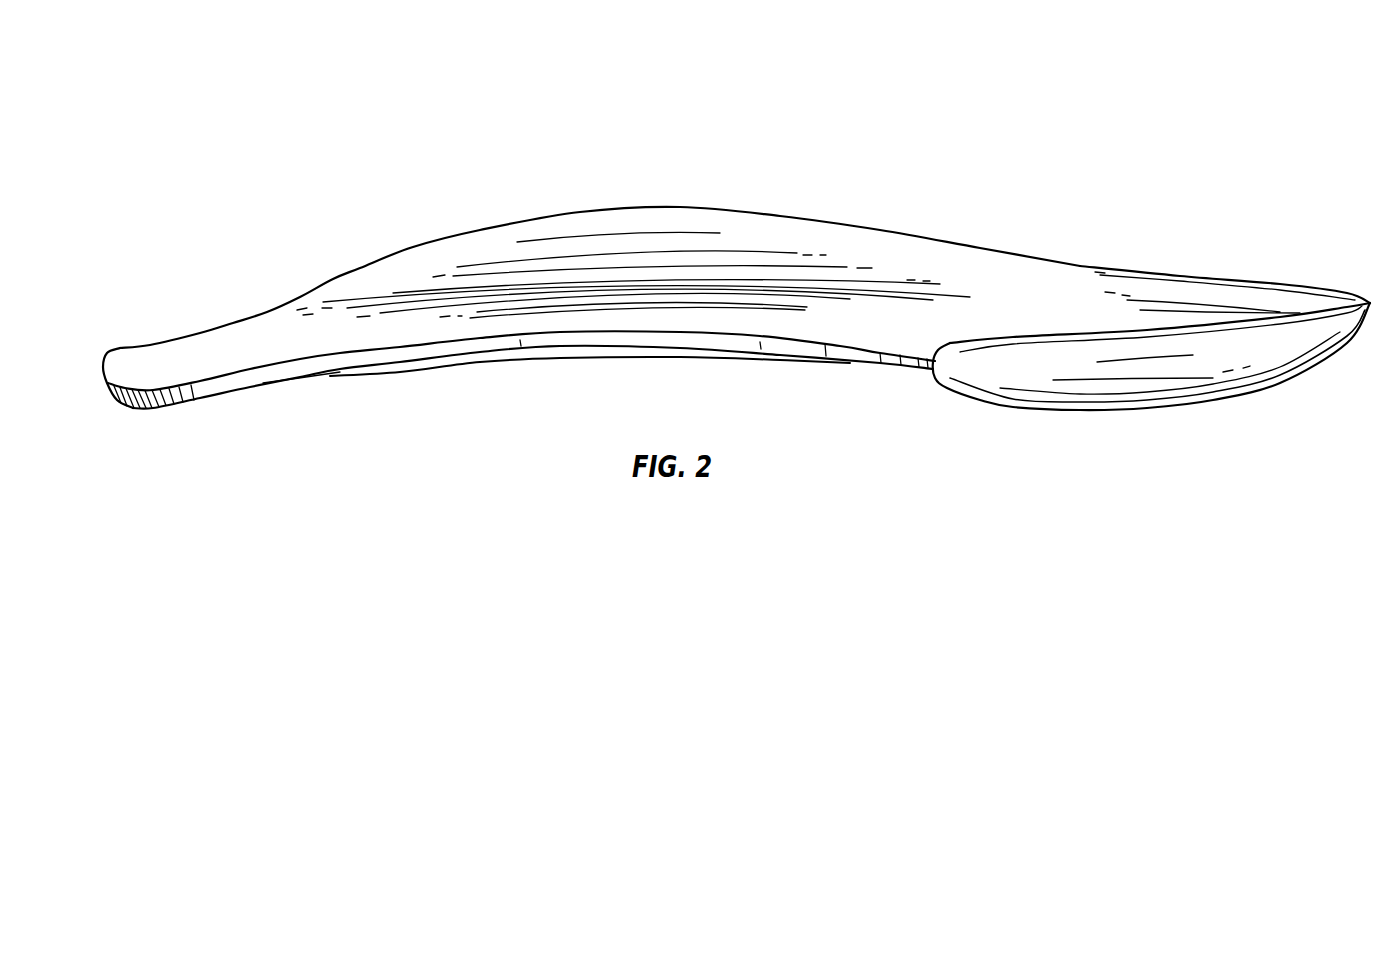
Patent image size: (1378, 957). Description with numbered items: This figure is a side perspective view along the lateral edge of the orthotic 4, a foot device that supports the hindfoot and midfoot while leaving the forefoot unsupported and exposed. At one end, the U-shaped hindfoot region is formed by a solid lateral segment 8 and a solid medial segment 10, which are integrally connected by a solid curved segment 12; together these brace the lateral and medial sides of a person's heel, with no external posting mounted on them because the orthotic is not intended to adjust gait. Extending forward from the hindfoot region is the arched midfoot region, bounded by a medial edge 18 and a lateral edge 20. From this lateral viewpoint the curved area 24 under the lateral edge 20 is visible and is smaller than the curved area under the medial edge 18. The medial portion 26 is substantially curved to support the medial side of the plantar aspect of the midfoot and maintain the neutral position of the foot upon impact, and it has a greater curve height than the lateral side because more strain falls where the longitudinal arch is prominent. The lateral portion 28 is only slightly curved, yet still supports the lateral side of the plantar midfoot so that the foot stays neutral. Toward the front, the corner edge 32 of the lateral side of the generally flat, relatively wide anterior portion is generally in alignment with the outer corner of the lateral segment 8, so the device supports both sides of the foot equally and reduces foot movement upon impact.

The orthotic 4 is at (1112, 122).
The lateral segment 8 is at (1033, 373).
The medial segment 10 is at (1083, 298).
The curved segment 12 is at (1343, 347).
The medial edge 18 is at (661, 207).
The lateral edge 20 is at (488, 350).
The curved area 24 is at (577, 362).
The medial portion 26 is at (432, 265).
The lateral portion 28 is at (424, 330).
The corner edge 32 is at (140, 383).